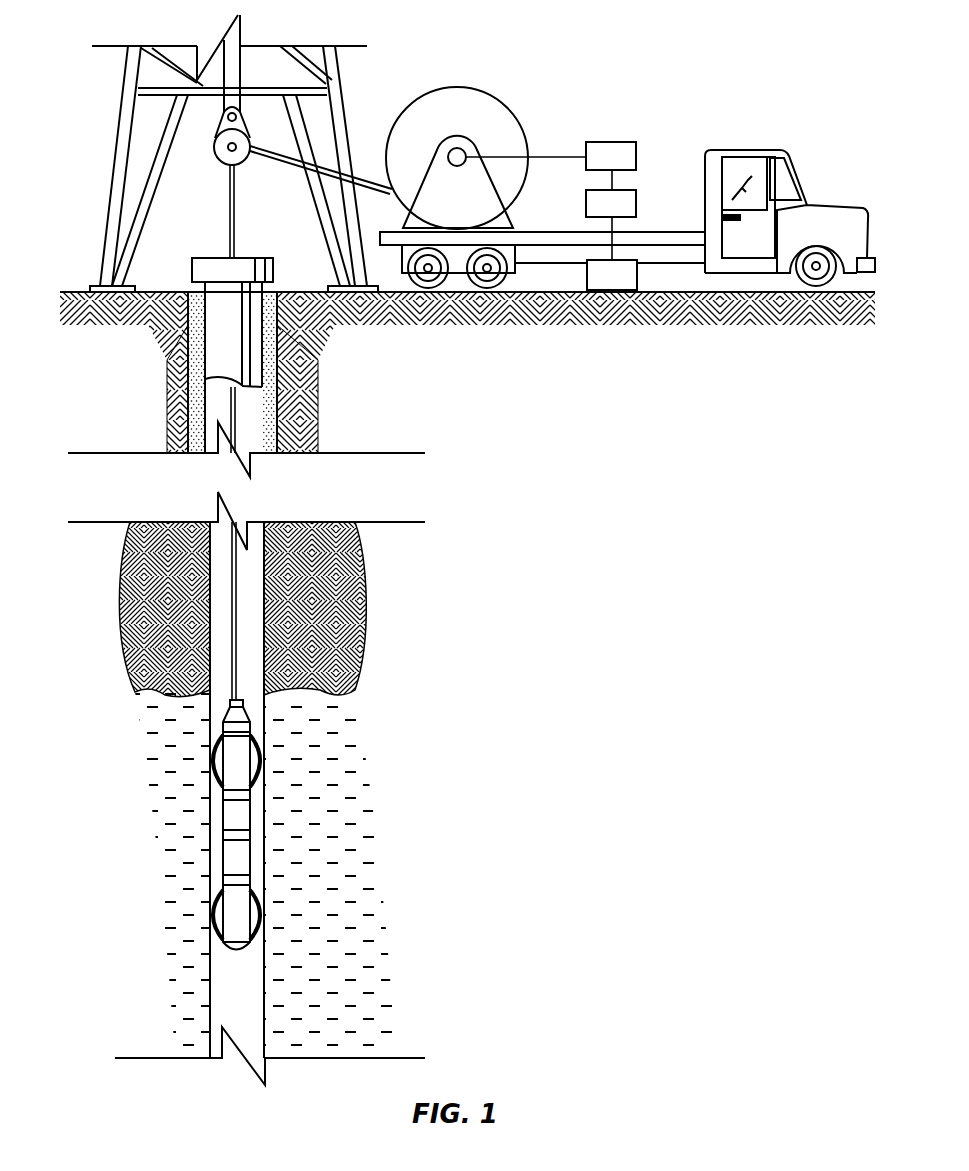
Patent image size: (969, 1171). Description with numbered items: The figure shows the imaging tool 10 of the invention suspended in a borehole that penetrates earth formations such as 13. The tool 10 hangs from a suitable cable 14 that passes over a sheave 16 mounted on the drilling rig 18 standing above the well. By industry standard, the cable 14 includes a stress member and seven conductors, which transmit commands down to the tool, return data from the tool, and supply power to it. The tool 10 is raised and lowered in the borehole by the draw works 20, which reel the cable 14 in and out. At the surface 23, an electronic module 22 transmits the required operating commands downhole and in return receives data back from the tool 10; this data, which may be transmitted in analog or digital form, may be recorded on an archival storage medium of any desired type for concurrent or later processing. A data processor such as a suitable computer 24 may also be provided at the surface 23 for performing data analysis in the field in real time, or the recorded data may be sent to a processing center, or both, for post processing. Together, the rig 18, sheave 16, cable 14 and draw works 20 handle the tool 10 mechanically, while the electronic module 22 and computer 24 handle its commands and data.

The imaging tool 10 is at (253, 816).
The earth formations 13 is at (397, 640).
The cable 14 is at (227, 230).
The sheave 16 is at (213, 147).
The drilling rig 18 is at (120, 97).
The draw works 20 is at (457, 85).
The electronic module 22 is at (622, 142).
The surface 23 is at (80, 292).
The computer 24 is at (622, 190).